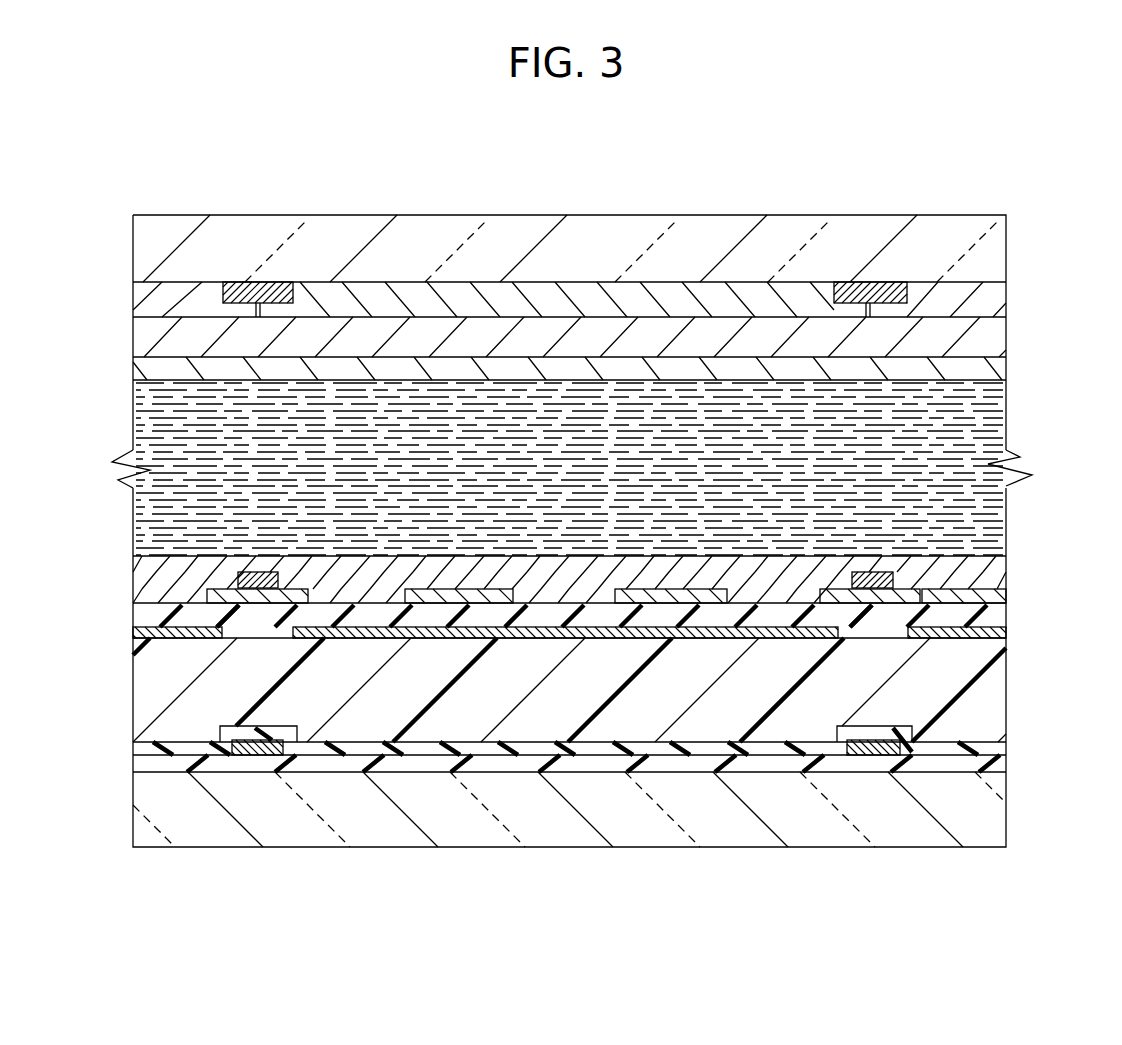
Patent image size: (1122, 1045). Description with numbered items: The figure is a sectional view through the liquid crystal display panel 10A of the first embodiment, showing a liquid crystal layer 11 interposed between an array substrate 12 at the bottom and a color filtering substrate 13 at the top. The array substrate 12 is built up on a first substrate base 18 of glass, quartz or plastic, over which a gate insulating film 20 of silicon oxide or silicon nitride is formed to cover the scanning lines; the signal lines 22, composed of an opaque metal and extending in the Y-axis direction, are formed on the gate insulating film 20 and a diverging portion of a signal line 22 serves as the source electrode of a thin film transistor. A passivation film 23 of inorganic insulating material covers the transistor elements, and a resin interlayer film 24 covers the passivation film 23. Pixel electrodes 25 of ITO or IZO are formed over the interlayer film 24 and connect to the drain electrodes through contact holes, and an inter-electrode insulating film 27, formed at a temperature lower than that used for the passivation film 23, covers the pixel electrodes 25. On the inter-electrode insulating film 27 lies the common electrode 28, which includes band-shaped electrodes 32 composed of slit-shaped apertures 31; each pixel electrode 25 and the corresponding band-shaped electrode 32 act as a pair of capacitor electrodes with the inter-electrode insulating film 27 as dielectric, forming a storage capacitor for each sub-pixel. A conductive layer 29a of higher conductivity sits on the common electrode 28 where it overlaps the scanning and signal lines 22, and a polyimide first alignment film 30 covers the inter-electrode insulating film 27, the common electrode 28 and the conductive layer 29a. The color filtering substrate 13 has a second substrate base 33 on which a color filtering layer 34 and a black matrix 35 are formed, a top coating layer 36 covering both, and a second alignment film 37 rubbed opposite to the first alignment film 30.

The liquid crystal display panel 10A is at (450, 113).
The color filtering substrate 13 is at (1040, 215).
The second substrate base 33 is at (505, 245).
The color filtering layer 34 is at (383, 297).
The black matrix 35 is at (258, 300).
The top coating layer 36 is at (610, 340).
The second alignment film 37 is at (738, 368).
The liquid crystal layer 11 is at (1040, 380).
The array substrate 12 is at (1040, 556).
The first alignment film 30 is at (142, 580).
The slit-shaped aperture 31 is at (560, 596).
The band-shaped electrode 32 is at (678, 597).
The inter-electrode insulating film 27 is at (142, 617).
The pixel electrode 25 is at (613, 636).
The interlayer film 24 is at (957, 718).
The common electrode 28 is at (297, 593).
The conductive layer 29a is at (238, 582).
The signal line 22 is at (258, 757).
The passivation film 23 is at (702, 752).
The gate insulating film 20 is at (503, 762).
The first substrate base 18 is at (142, 800).